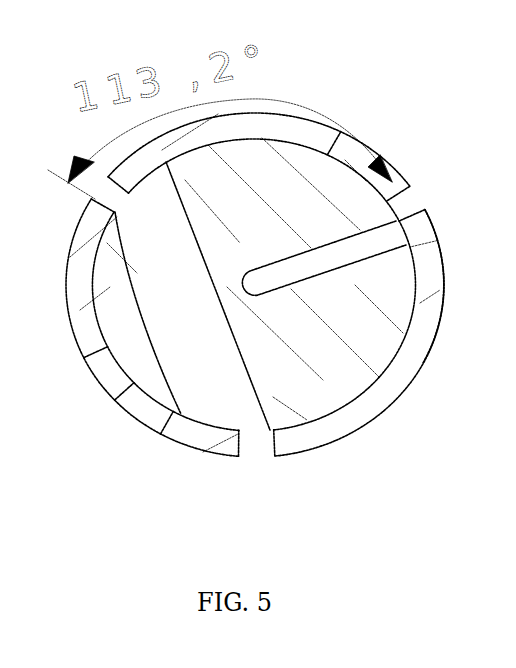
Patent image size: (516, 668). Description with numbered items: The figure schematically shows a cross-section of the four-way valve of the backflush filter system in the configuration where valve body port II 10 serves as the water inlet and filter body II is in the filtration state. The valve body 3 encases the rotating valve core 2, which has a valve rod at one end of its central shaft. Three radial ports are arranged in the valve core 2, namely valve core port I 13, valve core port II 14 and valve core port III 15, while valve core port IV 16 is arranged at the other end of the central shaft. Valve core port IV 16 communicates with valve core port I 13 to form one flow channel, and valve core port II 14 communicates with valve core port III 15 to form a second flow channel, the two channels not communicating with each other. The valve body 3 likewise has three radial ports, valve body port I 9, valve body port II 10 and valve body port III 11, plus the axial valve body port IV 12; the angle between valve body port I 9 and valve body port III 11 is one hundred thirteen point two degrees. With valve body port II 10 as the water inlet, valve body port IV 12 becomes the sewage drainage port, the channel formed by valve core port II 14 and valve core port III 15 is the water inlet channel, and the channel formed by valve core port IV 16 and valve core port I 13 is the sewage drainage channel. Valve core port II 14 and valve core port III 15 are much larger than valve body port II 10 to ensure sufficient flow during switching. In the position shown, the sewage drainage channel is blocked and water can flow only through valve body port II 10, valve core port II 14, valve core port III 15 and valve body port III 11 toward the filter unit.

The valve core 2 is at (238, 203).
The valve body 3 is at (349, 137).
The valve body port I 9 is at (407, 203).
The valve body port II 10 is at (257, 448).
The valve body port III 11 is at (106, 188).
The valve body port IV 12 is at (353, 360).
The valve core port IV 16 is at (257, 287).
The valve core port I 13 is at (387, 237).
The valve core port II 14 is at (220, 413).
The valve core port III 15 is at (145, 220).